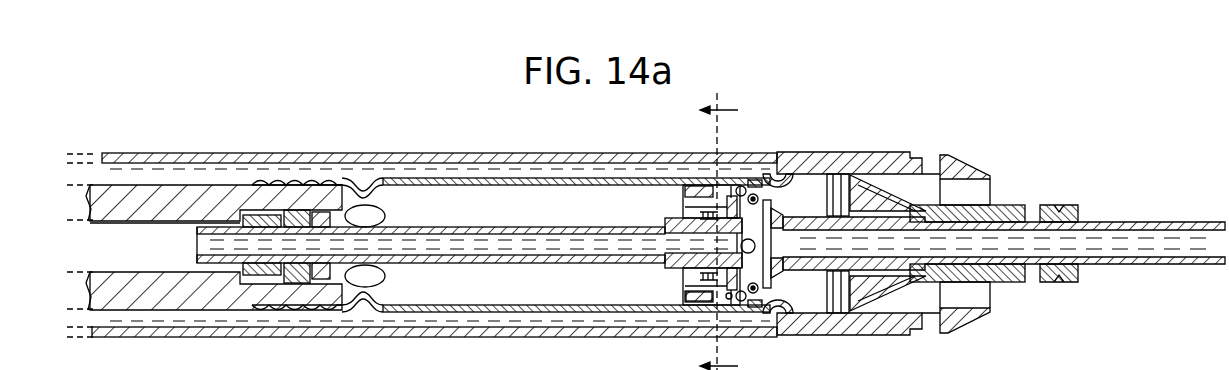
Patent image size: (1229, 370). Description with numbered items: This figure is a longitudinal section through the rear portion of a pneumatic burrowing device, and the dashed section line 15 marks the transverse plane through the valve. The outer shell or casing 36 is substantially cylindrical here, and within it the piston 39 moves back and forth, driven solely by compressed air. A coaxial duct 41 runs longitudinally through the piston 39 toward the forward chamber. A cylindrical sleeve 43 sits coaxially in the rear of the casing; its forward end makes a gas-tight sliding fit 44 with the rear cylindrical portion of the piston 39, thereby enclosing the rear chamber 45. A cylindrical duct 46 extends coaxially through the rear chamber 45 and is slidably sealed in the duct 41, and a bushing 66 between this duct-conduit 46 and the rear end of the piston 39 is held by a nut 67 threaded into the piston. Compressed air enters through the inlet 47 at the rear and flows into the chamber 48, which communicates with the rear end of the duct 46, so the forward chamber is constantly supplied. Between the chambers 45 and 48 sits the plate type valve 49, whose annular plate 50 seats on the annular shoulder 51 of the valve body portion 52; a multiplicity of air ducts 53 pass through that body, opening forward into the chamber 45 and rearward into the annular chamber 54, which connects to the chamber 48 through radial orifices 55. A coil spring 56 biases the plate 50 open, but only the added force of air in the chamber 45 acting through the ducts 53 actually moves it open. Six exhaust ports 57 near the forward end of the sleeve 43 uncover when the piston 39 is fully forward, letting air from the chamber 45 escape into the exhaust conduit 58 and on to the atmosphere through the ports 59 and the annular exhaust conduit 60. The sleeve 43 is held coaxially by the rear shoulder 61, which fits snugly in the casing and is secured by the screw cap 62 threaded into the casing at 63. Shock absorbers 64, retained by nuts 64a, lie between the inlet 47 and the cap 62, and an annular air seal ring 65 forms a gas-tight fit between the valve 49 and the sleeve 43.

The section line for FIG. 15 is at (723, 229).
The outer shell or casing 36 is at (600, 158).
The piston 39 is at (168, 200).
The coaxial duct 41 is at (148, 273).
The cylindrical sleeve 43 is at (470, 182).
The gas-tight sliding fit 44 is at (317, 180).
The rear chamber 45 is at (528, 188).
The cylindrical duct 46 is at (551, 255).
The compressed air inlet 47 is at (1162, 223).
The chamber 48 is at (772, 210).
The valve 49 is at (710, 185).
The annular plate 50 is at (730, 300).
The annular shoulder 51 is at (726, 184).
The body portion of the valve 52 is at (692, 306).
The air ducts 53 is at (686, 207).
The annular chamber 54 is at (741, 186).
The radial orifices 55 is at (756, 194).
The coil spring 56 is at (688, 217).
The exhaust ports 57 is at (387, 216).
The exhaust conduit 58 is at (406, 170).
The ports 59 is at (794, 176).
The annular exhaust conduit 60 is at (853, 197).
The rear shoulder 61 is at (868, 314).
The screw cap 62 is at (965, 155).
The threaded connection 63 is at (880, 327).
The shock absorbers 64 is at (967, 284).
The nuts 64a is at (1046, 284).
The annular air seal ring 65 is at (760, 308).
The bushing 66 is at (260, 276).
The nut 67 is at (317, 272).